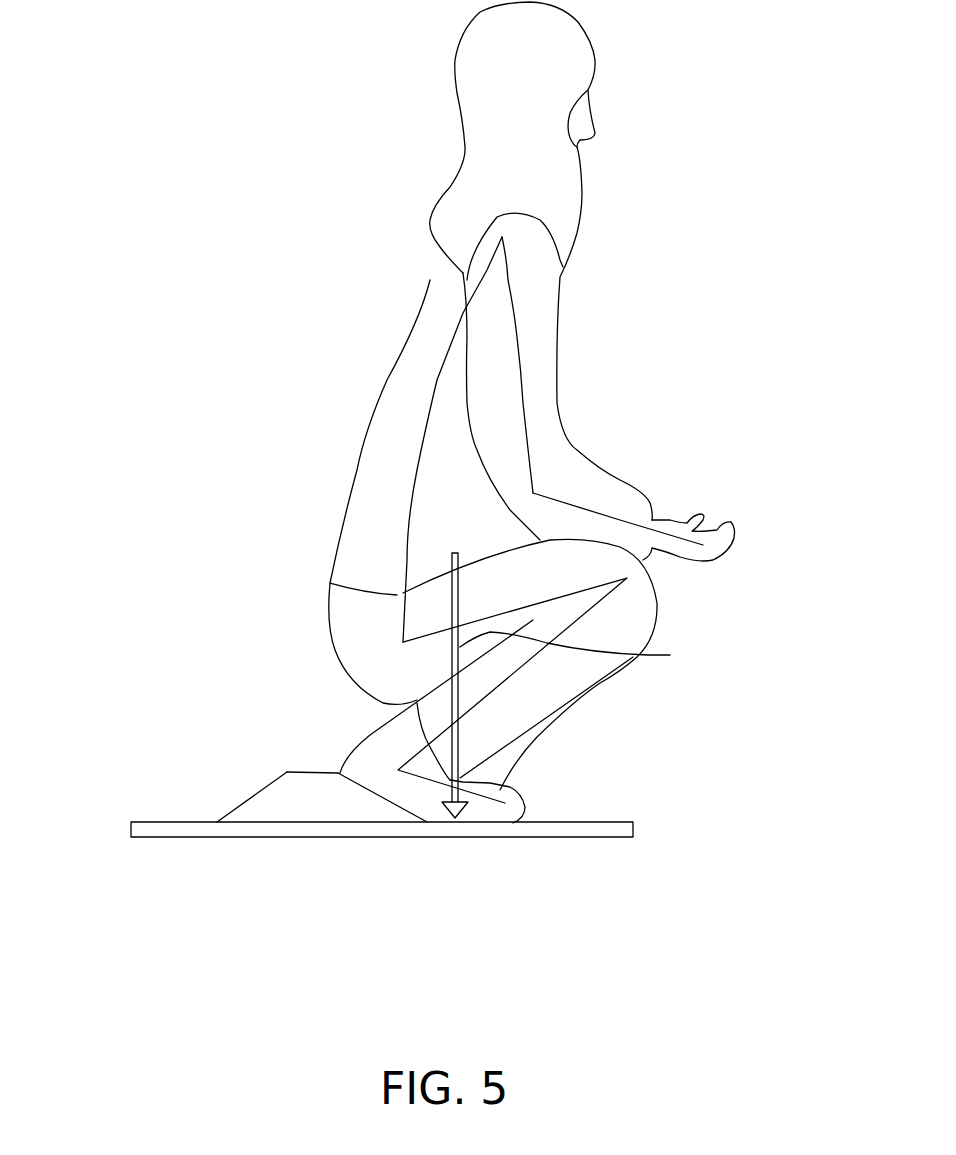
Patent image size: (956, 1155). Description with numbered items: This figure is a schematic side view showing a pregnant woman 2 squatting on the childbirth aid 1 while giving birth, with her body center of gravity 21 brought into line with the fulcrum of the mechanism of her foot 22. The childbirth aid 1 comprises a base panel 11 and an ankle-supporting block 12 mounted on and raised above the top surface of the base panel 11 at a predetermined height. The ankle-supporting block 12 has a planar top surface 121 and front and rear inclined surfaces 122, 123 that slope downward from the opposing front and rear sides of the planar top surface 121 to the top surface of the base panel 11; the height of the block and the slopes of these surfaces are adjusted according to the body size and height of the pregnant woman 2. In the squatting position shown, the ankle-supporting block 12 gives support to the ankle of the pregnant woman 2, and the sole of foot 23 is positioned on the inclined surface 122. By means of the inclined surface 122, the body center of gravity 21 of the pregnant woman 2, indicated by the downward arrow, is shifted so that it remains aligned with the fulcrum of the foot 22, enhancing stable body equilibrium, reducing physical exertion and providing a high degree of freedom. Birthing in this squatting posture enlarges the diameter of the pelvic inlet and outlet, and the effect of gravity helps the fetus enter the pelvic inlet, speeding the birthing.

The childbirth aid 1 is at (620, 813).
The base panel 11 is at (580, 832).
The ankle-supporting block 12 is at (310, 802).
The planar top surface 121 is at (308, 770).
The front inclined surface 122 is at (383, 798).
The rear inclined surface 123 is at (250, 797).
The pregnant woman 2 is at (608, 310).
The body center of gravity 21 is at (670, 655).
The foot 22 is at (455, 797).
The sole of foot 23 is at (498, 793).